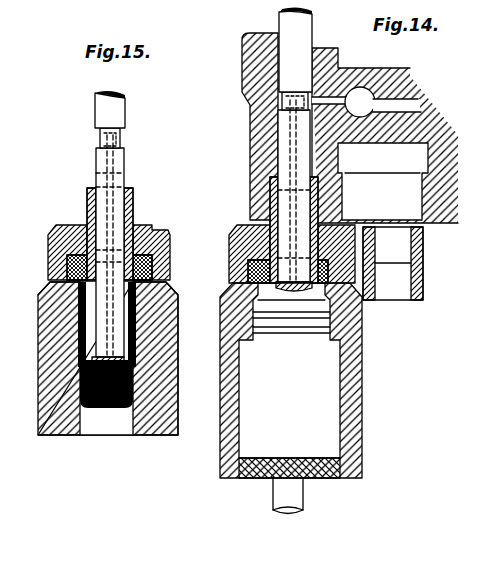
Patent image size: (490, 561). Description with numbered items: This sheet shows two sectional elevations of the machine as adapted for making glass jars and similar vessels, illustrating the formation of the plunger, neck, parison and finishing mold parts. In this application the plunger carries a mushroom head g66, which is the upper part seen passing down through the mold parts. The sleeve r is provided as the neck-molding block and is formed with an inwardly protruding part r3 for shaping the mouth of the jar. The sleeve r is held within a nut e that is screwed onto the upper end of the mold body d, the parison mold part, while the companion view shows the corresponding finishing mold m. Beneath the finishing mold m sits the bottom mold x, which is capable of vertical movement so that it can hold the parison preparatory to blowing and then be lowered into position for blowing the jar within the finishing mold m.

In FIG. 15, the valve body d is at (47, 349).
In FIG. 15, the gland nut e is at (62, 228).
In FIG. 15, the sleeve r is at (75, 262).
In FIG. 14, the sleeve r is at (258, 264).
In FIG. 15, the packing ring r3 is at (150, 286).
In FIG. 14, the packing ring r3 is at (250, 281).
In FIG. 15, the valve stem g66 is at (138, 350).
In FIG. 14, the valve stem g66 is at (290, 289).
In FIG. 14, the casing m is at (357, 332).
In FIG. 14, the bottom mold x is at (350, 480).